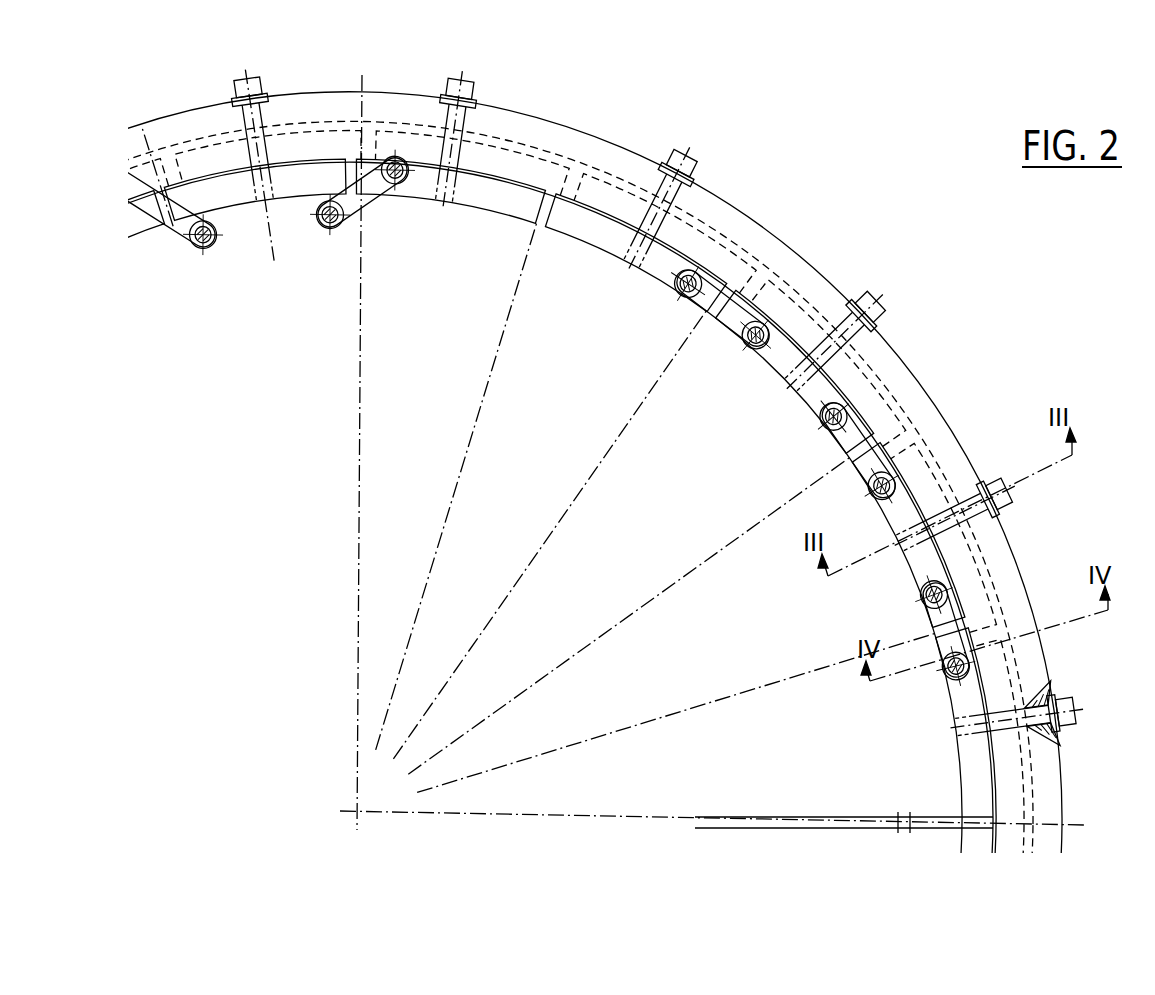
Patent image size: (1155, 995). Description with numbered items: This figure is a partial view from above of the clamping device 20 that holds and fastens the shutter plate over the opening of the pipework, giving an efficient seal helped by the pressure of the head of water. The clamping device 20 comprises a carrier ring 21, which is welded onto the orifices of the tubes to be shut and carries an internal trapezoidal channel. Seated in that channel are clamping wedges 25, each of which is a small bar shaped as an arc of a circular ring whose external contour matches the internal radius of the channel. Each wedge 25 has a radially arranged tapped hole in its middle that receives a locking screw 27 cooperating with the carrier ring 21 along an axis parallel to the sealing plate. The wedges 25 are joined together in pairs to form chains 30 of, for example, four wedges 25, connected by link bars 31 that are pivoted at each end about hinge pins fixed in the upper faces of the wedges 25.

The clamping device 20 is at (608, 139).
The carrier ring 21 is at (903, 383).
The clamping wedge 25 is at (588, 228).
The locking screw 27 is at (233, 93).
The chain 30 is at (243, 245).
The link bar 31 is at (378, 200).